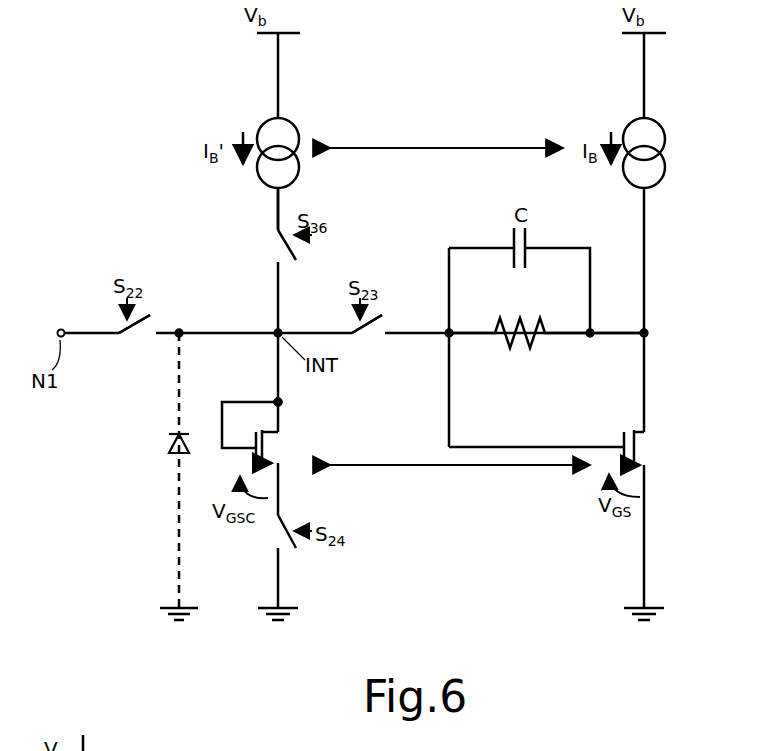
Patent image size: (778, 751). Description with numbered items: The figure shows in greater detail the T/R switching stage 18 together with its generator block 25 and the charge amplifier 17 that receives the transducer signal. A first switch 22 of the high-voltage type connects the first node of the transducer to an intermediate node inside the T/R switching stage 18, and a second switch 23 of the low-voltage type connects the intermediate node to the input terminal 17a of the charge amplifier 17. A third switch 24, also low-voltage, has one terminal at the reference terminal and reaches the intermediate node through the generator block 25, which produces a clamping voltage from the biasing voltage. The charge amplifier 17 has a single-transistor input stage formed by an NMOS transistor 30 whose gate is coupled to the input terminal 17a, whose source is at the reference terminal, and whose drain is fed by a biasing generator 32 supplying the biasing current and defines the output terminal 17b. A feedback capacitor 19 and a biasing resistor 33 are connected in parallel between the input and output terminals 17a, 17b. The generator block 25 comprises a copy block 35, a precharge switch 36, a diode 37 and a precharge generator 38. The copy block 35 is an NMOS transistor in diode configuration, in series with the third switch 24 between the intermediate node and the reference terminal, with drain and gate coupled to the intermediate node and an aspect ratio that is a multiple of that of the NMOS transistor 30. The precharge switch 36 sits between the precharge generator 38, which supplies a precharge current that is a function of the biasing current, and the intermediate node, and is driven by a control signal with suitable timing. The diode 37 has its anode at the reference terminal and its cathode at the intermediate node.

The charge amplifier 17 is at (572, 488).
The input terminal 17a is at (447, 338).
The output terminal 17b is at (648, 328).
The T/R switching stage 18 is at (186, 240).
The feedback capacitor 19 is at (512, 248).
The first switch 22 is at (126, 338).
The second switch 23 is at (368, 338).
The third switch 24 is at (285, 533).
The generator block 25 is at (302, 412).
The NMOS transistor 30 is at (636, 437).
The biasing generator 32 is at (664, 152).
The biasing resistor 33 is at (560, 347).
The copy block 35 is at (266, 442).
The precharge switch 36 is at (281, 237).
The diode 37 is at (170, 455).
The precharge generator 38 is at (290, 118).